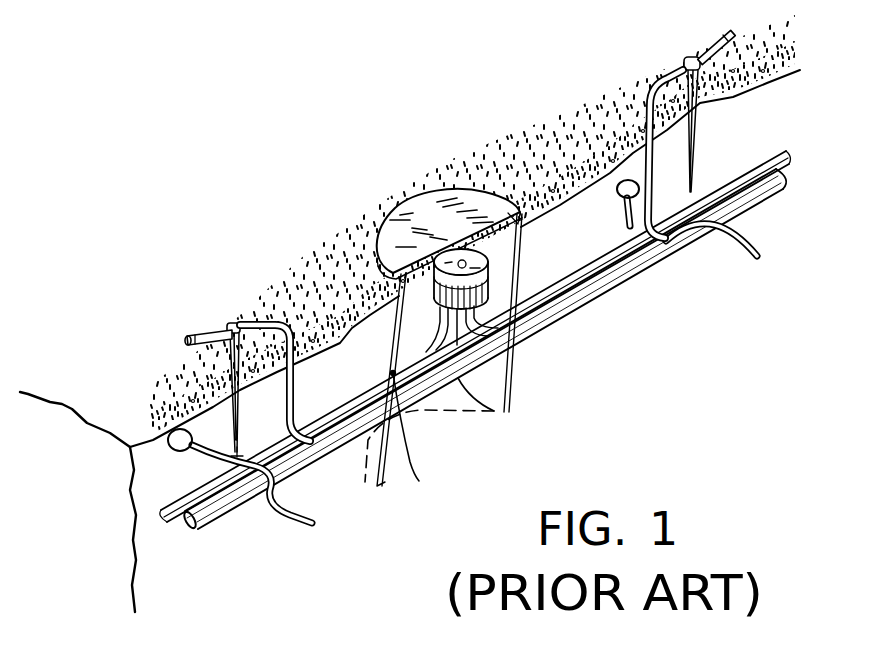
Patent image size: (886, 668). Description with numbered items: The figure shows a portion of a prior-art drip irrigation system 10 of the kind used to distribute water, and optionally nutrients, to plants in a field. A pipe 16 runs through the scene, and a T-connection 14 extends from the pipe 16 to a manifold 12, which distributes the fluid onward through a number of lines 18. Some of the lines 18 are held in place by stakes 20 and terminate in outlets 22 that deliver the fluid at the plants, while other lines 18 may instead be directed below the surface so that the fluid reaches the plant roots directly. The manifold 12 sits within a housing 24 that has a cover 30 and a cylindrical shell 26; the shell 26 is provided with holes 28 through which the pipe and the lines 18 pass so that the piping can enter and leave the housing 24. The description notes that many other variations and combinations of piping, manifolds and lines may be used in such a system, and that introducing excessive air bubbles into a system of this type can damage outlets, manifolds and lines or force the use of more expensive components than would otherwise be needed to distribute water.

The drip irrigation system 10 is at (553, 333).
The manifold 12 is at (485, 249).
The T-connection 14 is at (494, 411).
The pipe 16 is at (210, 516).
The lines 18 is at (310, 525).
The stakes 20 is at (228, 357).
The outlets 22 is at (188, 342).
The housing 24 is at (401, 201).
The cylindrical shell 26 is at (405, 330).
The holes 28 is at (418, 433).
The cover 30 is at (446, 225).